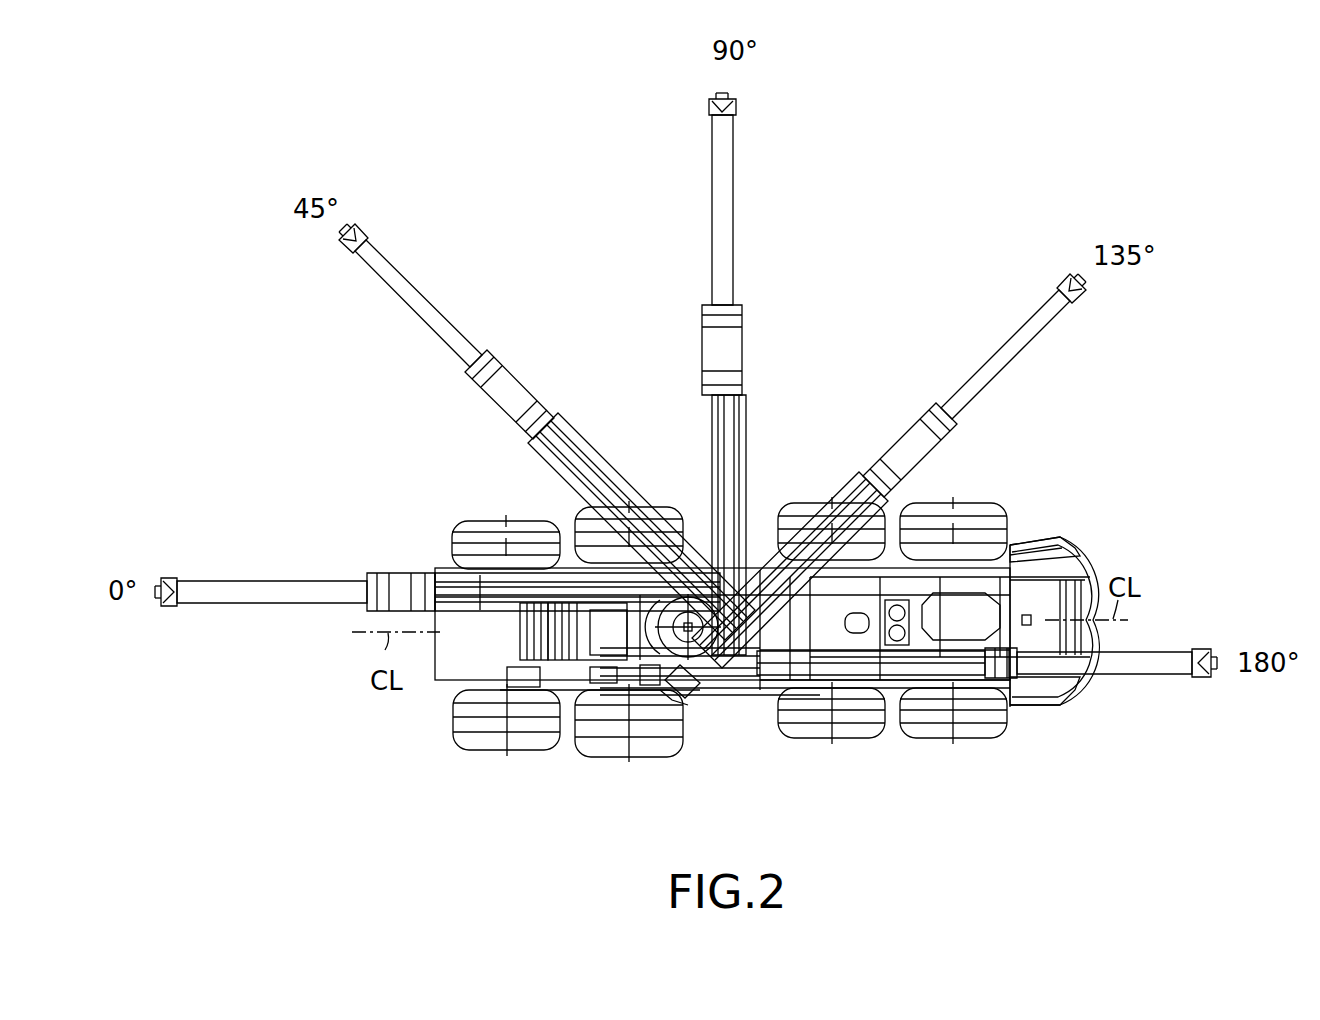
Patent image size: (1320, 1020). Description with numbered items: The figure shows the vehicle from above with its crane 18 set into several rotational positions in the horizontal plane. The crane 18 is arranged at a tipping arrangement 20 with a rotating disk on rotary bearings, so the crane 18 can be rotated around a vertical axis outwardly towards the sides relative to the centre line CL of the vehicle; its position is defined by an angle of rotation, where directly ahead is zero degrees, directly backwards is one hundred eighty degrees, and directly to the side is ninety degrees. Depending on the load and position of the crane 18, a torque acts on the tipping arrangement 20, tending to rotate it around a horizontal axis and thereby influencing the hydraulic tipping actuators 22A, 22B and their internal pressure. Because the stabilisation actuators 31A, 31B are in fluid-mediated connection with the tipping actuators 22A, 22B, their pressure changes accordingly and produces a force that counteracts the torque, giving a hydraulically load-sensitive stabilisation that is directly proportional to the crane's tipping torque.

The crane 18 is at (720, 157).
The tipping arrangement 20 is at (677, 693).
The hydraulic tipping actuator 22A is at (518, 620).
The hydraulic tipping actuator 22B is at (520, 650).
The stabilisation actuator 31A is at (1063, 553).
The stabilisation actuator 31B is at (1060, 637).